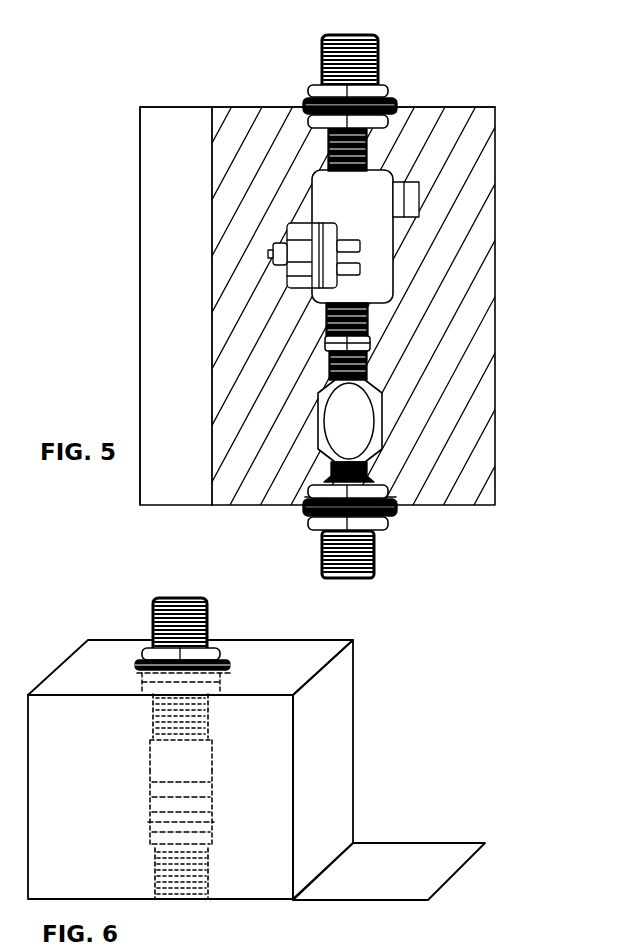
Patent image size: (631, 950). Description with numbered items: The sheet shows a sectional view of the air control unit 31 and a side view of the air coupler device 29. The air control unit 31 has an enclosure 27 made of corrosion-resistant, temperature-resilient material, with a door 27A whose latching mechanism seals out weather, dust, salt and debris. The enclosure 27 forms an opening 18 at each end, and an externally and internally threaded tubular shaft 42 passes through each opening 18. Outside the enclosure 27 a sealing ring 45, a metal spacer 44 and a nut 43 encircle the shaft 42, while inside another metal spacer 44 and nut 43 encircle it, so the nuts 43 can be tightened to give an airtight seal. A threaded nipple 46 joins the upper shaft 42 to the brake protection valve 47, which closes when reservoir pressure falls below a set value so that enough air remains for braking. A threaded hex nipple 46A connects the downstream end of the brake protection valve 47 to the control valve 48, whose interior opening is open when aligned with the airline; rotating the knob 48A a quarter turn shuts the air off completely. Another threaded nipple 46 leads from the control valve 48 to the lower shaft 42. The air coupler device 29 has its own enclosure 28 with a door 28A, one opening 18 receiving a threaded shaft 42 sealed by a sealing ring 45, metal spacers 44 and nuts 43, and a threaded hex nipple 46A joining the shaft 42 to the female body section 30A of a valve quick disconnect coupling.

In FIG. 5, the opening 18 is at (397, 112).
In FIG. 6, the opening 18 is at (230, 670).
In FIG. 5, the enclosure 27 is at (495, 382).
In FIG. 5, the door 27A is at (140, 268).
In FIG. 6, the enclosure 28 is at (355, 682).
In FIG. 6, the door 28A is at (408, 843).
In FIG. 6, the air coupler device 29 is at (362, 751).
In FIG. 6, the female body section of valve quick disconnect coupling 30A is at (148, 773).
In FIG. 5, the air control unit 31 is at (466, 100).
In FIG. 5, the threaded tubular shaft 42 is at (322, 46).
In FIG. 6, the threaded tubular shaft 42 is at (160, 610).
In FIG. 5, the nut 43 is at (312, 85).
In FIG. 6, the nut 43 is at (147, 650).
In FIG. 5, the metal spacer 44 is at (305, 100).
In FIG. 6, the metal spacer 44 is at (138, 663).
In FIG. 5, the sealing ring 45 is at (305, 107).
In FIG. 6, the sealing ring 45 is at (137, 666).
In FIG. 5, the threaded nipple 46 is at (328, 163).
In FIG. 6, the threaded nipple 46 is at (153, 732).
In FIG. 5, the threaded hex nipple 46A is at (327, 343).
In FIG. 5, the brake protection valve 47 is at (311, 195).
In FIG. 5, the control valve 48 is at (321, 418).
In FIG. 5, the knob 48A is at (369, 429).